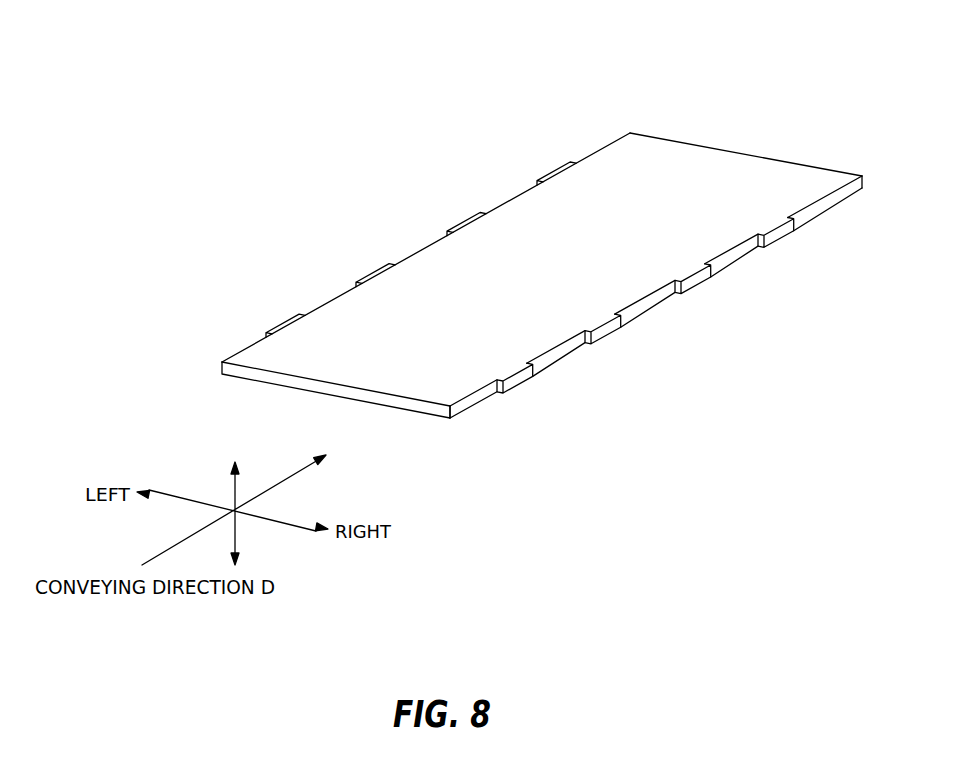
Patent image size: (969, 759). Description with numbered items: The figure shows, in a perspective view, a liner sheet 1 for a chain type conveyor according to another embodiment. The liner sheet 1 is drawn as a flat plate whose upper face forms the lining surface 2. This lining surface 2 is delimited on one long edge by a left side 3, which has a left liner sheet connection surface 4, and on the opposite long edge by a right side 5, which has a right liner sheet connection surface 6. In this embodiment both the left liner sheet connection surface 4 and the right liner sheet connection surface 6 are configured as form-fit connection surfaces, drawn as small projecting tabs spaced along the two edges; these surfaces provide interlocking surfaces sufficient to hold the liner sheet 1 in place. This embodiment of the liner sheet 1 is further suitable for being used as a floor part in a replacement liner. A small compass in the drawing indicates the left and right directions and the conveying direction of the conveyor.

The liner sheet 1 is at (556, 229).
The lining surface 2 is at (720, 165).
The left side 3 is at (598, 128).
The left liner sheet connection surface 4 is at (291, 323).
The right side 5 is at (854, 156).
The right liner sheet connection surface 6 is at (512, 378).